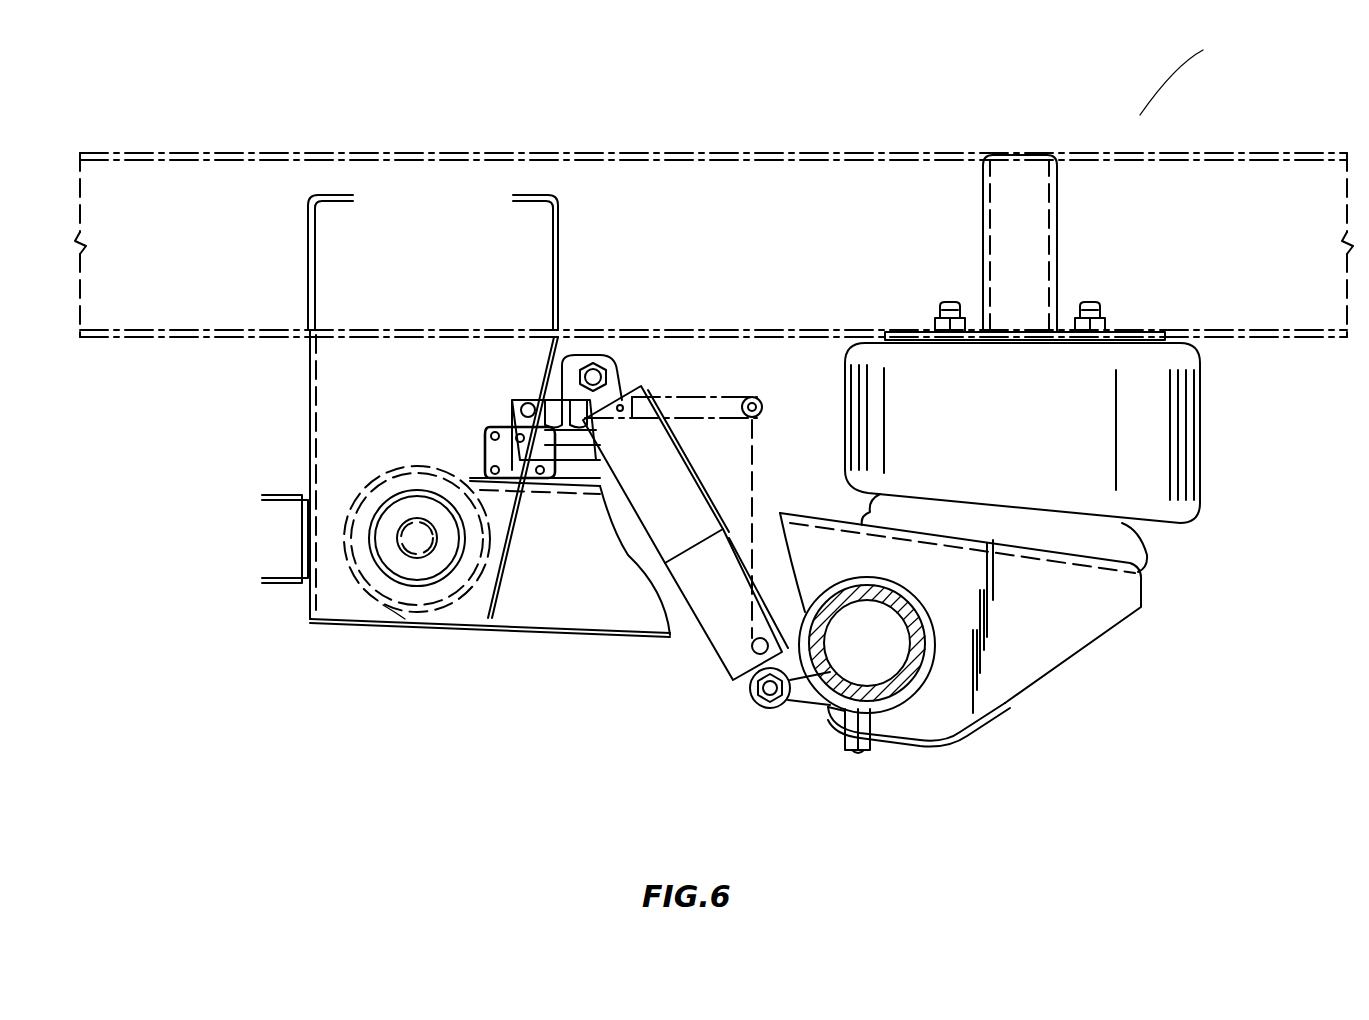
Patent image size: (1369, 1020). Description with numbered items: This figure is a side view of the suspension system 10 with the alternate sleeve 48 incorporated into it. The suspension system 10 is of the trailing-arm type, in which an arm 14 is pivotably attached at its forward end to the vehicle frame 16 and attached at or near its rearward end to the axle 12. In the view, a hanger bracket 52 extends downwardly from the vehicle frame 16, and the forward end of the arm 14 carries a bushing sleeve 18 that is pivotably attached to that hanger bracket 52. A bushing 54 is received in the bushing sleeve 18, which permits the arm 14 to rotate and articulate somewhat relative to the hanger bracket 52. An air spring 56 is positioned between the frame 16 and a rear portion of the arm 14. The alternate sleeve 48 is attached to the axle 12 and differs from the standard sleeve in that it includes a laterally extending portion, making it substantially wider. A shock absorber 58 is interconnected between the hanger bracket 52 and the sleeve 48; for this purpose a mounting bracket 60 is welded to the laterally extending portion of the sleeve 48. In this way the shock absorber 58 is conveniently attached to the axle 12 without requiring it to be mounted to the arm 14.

The suspension system 10 is at (1140, 115).
The axle 12 is at (921, 668).
The trailing arm 14 is at (1105, 635).
The vehicle frame 16 is at (568, 150).
The bushing sleeve 18 is at (383, 605).
The alternate sleeve 48 is at (940, 651).
The hanger bracket 52 is at (310, 403).
The bushing 54 is at (344, 546).
The air spring 56 is at (1205, 420).
The shock absorber 58 is at (700, 468).
The mounting bracket 60 is at (770, 715).